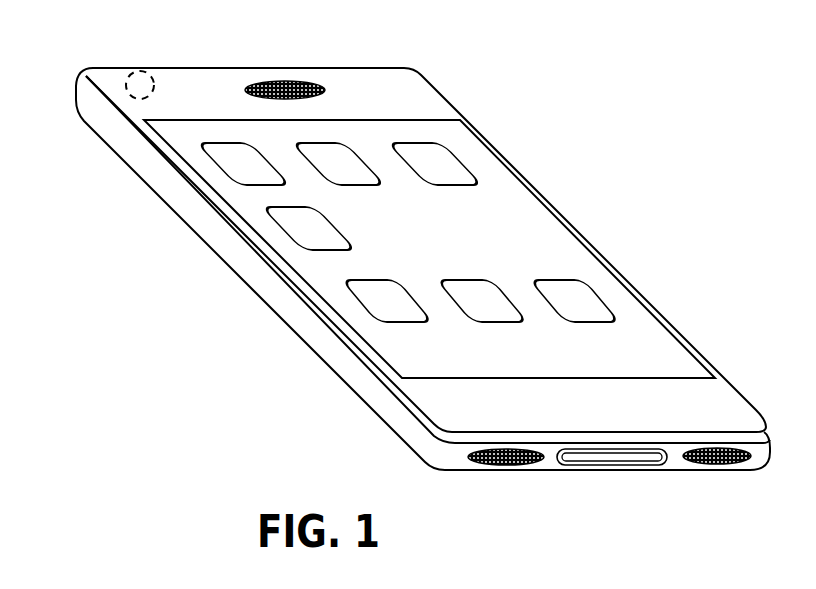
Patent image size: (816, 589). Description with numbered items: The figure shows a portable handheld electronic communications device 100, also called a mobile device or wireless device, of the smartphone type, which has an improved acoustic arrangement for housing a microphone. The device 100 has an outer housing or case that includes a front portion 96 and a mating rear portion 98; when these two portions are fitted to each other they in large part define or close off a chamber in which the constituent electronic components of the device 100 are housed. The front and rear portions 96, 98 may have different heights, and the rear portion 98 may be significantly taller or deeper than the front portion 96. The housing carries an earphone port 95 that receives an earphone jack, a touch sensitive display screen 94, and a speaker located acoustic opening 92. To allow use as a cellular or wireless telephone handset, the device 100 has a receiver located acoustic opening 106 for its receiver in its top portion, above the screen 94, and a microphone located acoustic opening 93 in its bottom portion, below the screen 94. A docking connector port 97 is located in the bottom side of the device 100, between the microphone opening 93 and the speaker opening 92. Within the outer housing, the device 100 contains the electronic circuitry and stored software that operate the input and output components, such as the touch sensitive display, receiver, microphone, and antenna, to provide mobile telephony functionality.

The portable handheld electronic communications device 100 is at (272, 350).
The touch sensitive display screen 94 is at (507, 196).
The earphone port 95 is at (140, 72).
The front portion 96 is at (122, 118).
The rear portion 98 is at (176, 200).
The receiver located acoustic opening 106 is at (297, 83).
The speaker located acoustic opening 92 is at (487, 464).
The microphone located acoustic opening 93 is at (700, 466).
The docking connector port 97 is at (593, 459).